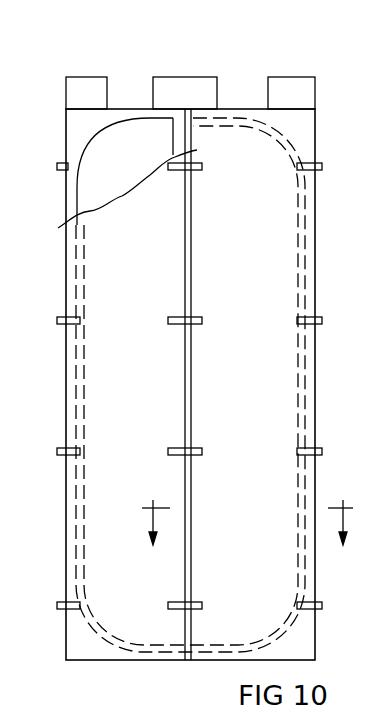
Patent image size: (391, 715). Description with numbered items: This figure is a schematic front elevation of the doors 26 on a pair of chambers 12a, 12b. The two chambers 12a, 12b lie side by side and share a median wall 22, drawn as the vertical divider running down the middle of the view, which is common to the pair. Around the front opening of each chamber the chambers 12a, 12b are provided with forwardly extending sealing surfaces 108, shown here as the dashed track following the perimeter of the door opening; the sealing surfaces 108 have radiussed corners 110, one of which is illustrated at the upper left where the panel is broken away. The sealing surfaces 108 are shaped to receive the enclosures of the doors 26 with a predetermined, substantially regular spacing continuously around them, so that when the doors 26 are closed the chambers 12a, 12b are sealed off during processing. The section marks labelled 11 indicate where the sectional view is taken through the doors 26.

The chamber 12a is at (244, 87).
The chamber 12b is at (136, 158).
The median wall 22 is at (172, 134).
The doors 26 is at (107, 483).
The sealing surfaces 108 is at (77, 190).
The radiussed corners 110 is at (90, 144).
The section line 11- 11 is at (251, 535).